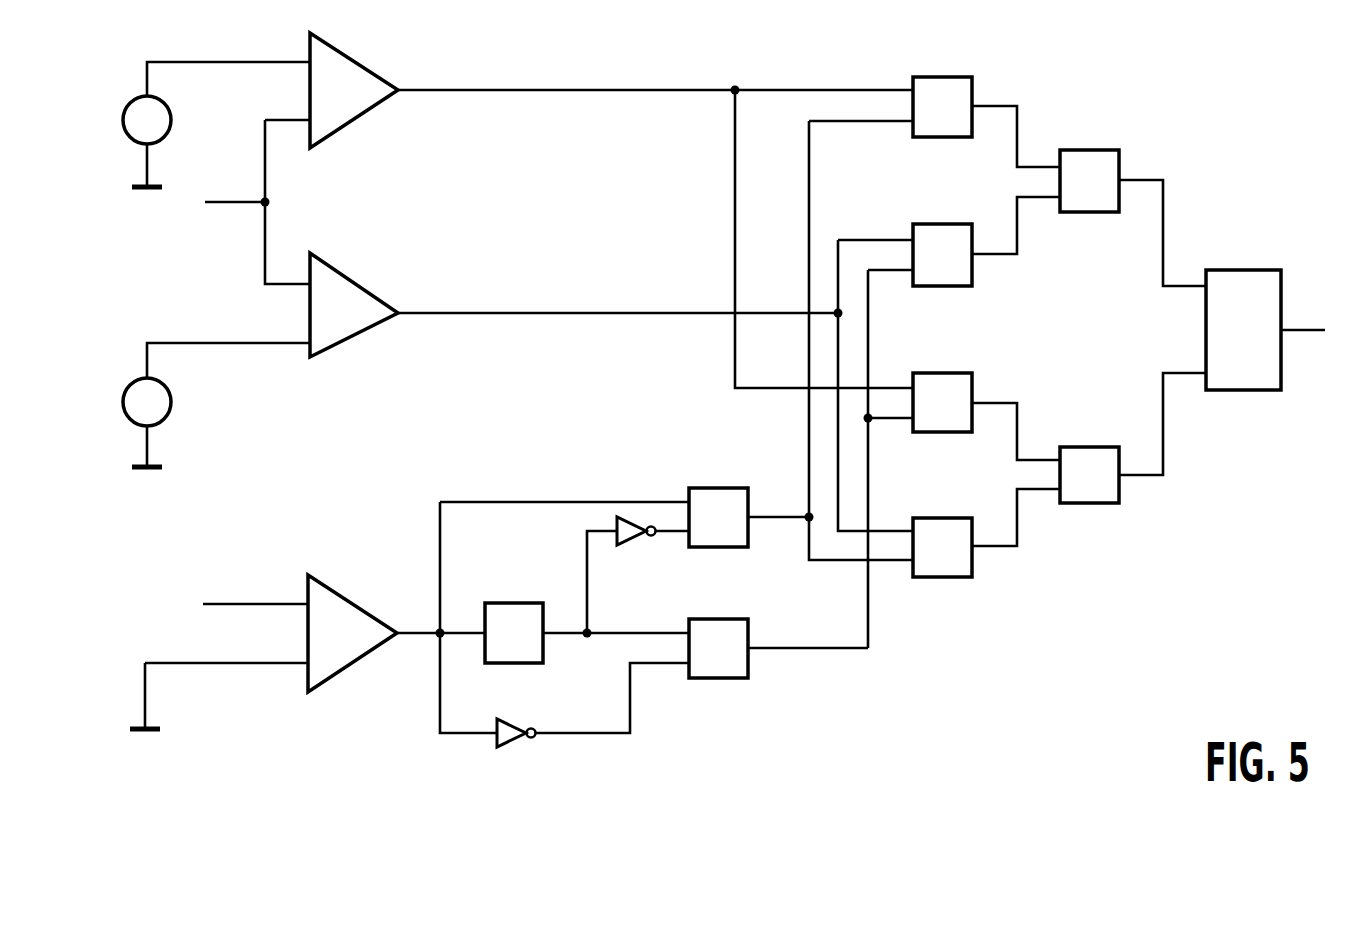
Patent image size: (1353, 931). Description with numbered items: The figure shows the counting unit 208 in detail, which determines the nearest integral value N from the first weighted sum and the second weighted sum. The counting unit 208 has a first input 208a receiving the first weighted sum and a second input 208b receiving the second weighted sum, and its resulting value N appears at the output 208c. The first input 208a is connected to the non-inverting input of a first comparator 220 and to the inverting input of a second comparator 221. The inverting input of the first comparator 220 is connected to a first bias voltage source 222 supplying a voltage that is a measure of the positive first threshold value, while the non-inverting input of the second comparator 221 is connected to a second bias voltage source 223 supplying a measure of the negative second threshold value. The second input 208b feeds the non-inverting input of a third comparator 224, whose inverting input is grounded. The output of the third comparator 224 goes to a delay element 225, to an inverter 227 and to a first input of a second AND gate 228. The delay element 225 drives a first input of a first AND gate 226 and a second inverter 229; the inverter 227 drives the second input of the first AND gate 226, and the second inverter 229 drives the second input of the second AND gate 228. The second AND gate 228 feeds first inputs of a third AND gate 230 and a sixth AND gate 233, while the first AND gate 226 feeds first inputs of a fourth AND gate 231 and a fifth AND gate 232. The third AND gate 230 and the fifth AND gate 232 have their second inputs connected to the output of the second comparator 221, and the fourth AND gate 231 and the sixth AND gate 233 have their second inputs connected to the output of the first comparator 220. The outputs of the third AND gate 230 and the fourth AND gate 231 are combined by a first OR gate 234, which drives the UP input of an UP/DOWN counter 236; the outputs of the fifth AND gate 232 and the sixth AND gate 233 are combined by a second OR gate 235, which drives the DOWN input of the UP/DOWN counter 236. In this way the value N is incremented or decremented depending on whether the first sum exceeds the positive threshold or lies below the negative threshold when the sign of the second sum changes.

The counting unit 208 is at (698, 448).
The first input 208a is at (218, 204).
The second input 208b is at (234, 603).
The output N 208c is at (1283, 320).
The first comparator 220 is at (365, 337).
The second comparator 221 is at (365, 117).
The first bias voltage source 222 is at (120, 400).
The second bias voltage source 223 is at (120, 119).
The third comparator 224 is at (365, 657).
The delay element 225 is at (513, 603).
The first AND gate 226 is at (720, 678).
The inverter 227 is at (508, 747).
The second AND gate 228 is at (716, 488).
The second inverter 229 is at (632, 545).
The third AND gate 230 is at (973, 88).
The fourth AND gate 231 is at (973, 275).
The fifth AND gate 232 is at (973, 380).
The sixth AND gate 233 is at (973, 565).
The first OR gate 234 is at (1120, 160).
The second OR gate 235 is at (1120, 492).
The UP/DOWN counter 236 is at (1243, 270).